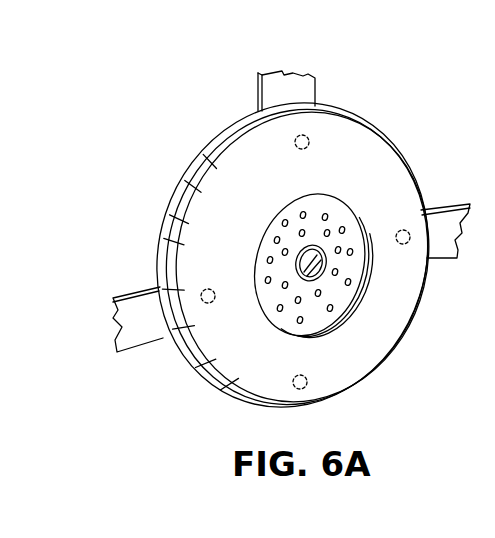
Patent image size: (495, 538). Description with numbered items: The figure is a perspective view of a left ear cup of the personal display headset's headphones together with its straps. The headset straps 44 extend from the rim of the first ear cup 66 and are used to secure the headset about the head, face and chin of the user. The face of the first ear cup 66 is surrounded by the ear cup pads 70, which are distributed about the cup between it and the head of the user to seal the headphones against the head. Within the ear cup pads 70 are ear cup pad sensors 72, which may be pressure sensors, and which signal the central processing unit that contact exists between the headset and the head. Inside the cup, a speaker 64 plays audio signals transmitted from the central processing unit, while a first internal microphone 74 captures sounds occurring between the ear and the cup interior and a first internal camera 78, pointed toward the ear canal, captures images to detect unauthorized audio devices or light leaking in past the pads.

The headset straps 44 is at (281, 82).
The second speaker 64 is at (326, 215).
The first ear cup 66 is at (193, 167).
The ear cup pads 70 is at (253, 173).
The ear cup pad sensors 72 is at (309, 136).
The first internal microphone 74 is at (274, 238).
The first internal camera 78 is at (316, 266).